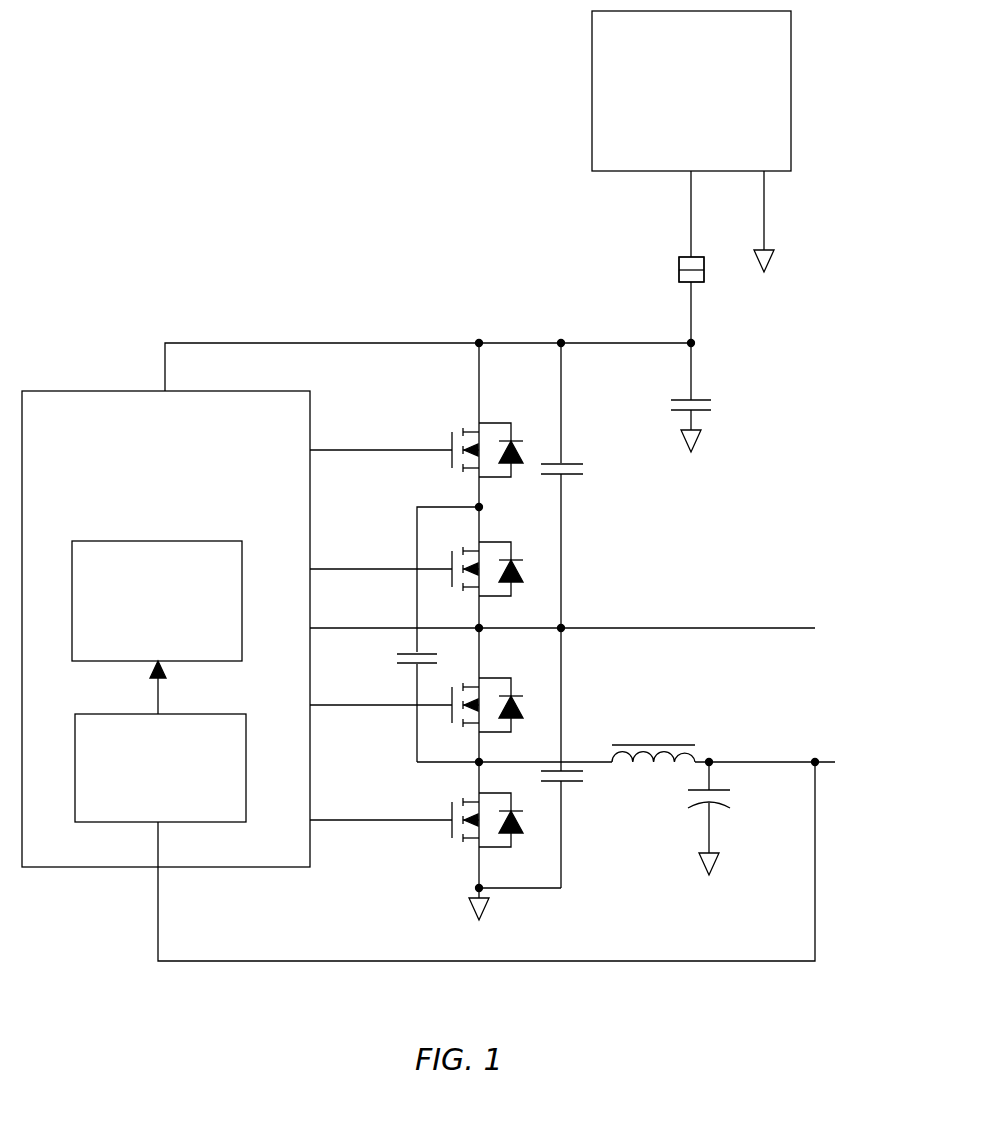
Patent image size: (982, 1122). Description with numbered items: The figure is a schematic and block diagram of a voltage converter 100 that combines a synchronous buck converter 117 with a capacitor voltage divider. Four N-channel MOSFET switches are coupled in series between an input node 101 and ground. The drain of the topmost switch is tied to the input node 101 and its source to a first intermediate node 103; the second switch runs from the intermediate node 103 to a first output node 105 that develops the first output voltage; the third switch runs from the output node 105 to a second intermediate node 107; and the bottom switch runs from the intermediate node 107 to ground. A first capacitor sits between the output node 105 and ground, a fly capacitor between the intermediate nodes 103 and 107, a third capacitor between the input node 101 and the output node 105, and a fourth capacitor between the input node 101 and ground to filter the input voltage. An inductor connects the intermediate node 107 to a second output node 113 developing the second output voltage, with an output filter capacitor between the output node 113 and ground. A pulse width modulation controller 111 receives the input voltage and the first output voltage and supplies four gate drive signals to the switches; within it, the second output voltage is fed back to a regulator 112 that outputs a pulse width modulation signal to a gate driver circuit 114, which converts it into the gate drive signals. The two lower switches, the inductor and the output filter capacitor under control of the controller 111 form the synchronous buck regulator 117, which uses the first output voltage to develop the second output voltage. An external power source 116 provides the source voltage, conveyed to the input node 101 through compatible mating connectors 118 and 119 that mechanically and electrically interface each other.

The voltage converter 100 is at (194, 200).
The input node 101 is at (479, 343).
The first intermediate node 103 is at (479, 507).
The first output node 105 is at (561, 628).
The second intermediate node 107 is at (479, 762).
The PWM controller 111 is at (148, 468).
The regulator 112 is at (142, 801).
The second output node 113 is at (709, 761).
The gate driver circuit 114 is at (139, 650).
The external power source 116 is at (673, 155).
The synchronous buck regulator 117 is at (682, 695).
The mating connector 118 is at (680, 262).
The mating connector 119 is at (680, 272).